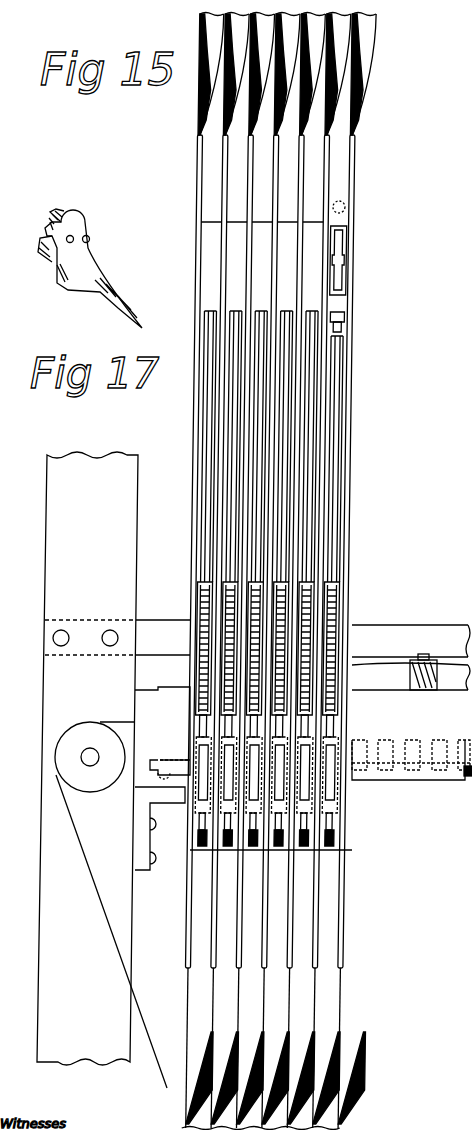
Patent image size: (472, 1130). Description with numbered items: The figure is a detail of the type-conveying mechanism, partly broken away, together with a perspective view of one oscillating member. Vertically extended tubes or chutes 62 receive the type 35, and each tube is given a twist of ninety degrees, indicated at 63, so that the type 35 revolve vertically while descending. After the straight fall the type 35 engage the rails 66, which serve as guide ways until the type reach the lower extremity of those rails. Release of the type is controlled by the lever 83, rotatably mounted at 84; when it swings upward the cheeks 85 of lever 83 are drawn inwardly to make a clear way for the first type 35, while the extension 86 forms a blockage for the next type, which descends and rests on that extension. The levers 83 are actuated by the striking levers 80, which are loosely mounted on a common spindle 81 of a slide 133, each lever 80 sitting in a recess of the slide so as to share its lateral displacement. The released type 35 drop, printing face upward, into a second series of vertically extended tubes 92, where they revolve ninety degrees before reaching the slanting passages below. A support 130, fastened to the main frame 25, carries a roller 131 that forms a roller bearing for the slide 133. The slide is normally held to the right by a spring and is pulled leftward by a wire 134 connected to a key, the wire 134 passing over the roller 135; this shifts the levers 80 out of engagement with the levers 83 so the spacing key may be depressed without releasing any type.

In FIG. 15, the main frame 25 is at (133, 530).
In FIG. 15, the type 35 is at (340, 245).
In FIG. 15, the vertically extended tubes or chutes 62 is at (242, 118).
In FIG. 15, the twist 63 is at (328, 80).
In FIG. 15, the rails 66 is at (217, 400).
In FIG. 15, the striking lever 80 is at (205, 846).
In FIG. 15, the common spindle 81 is at (467, 782).
In FIG. 15, the lever 83 is at (253, 800).
In FIG. 17, the lever 83 is at (90, 265).
In FIG. 17, the pivot 84 is at (74, 237).
In FIG. 17, the cheeks 85 is at (42, 237).
In FIG. 17, the extension 86 is at (72, 209).
In FIG. 15, the second series of vertically extended tubes 92 is at (300, 1005).
In FIG. 15, the support 130 is at (372, 643).
In FIG. 15, the roller 131 is at (414, 684).
In FIG. 15, the slide 133 is at (432, 745).
In FIG. 15, the wire 134 is at (110, 925).
In FIG. 15, the roller 135 is at (86, 752).